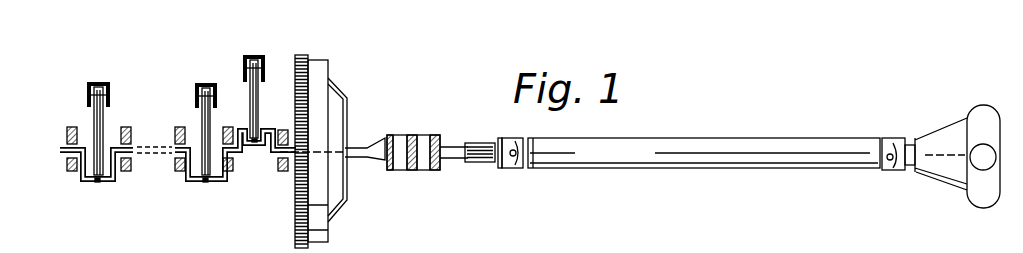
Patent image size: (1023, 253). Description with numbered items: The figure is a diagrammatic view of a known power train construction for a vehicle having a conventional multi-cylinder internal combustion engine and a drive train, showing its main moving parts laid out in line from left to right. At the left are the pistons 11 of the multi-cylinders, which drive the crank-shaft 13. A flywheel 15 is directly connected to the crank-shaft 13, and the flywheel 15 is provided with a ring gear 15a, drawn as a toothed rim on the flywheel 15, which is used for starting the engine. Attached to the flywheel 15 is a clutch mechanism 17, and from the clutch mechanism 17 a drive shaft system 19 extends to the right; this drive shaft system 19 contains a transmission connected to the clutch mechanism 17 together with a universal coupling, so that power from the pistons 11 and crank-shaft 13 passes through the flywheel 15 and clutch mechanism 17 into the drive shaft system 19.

The pistons 11 is at (103, 86).
The crank-shaft 13 is at (246, 158).
The flywheel 15 is at (320, 60).
The ring gear 15a is at (307, 44).
The clutch mechanism 17 is at (339, 108).
The drive shaft system 19 is at (598, 152).